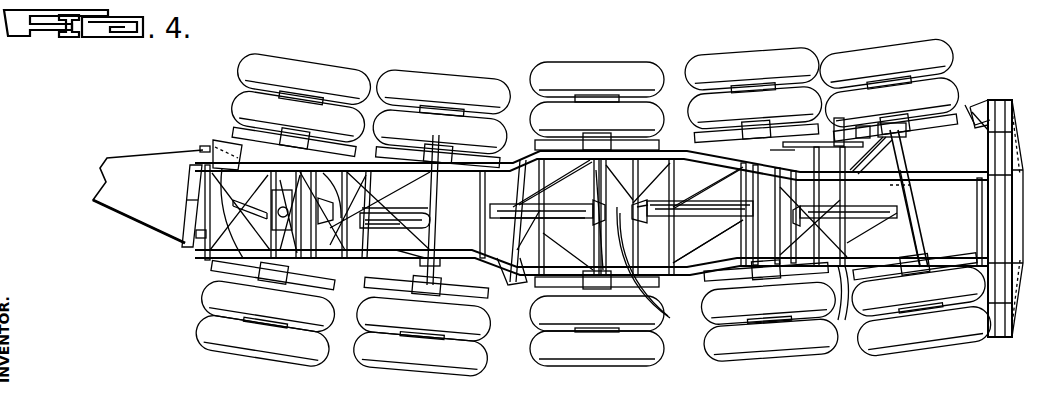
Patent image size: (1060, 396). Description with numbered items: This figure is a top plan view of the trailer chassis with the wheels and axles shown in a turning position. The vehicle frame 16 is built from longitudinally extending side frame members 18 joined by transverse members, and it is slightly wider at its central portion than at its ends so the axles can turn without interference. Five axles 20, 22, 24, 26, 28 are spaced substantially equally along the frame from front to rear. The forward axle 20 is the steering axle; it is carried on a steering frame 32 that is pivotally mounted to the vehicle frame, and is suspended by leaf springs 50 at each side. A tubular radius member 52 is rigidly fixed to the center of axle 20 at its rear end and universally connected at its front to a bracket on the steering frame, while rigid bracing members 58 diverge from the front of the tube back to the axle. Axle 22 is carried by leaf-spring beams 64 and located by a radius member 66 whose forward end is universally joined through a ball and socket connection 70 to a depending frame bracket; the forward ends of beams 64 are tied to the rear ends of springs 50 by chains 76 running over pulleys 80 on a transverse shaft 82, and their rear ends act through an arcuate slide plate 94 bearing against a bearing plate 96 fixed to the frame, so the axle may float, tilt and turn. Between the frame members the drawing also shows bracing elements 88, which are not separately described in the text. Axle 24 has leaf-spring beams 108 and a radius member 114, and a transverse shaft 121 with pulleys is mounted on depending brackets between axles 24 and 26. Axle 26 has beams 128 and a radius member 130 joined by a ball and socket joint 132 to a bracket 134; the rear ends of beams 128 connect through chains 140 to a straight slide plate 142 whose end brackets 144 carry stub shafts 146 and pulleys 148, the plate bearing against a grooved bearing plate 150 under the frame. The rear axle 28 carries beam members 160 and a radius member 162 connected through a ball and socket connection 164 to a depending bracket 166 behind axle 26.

The vehicle frame 16 is at (570, 168).
The side frame members 18 is at (478, 160).
The axle 20 is at (310, 308).
The axle 22 is at (430, 250).
The axle 24 is at (600, 191).
The axle 26 is at (757, 166).
The axle 28 is at (898, 150).
The steering frame 32 is at (216, 138).
The leaf springs 50 is at (277, 140).
The radius member 52 is at (192, 200).
The bracing members 58 is at (910, 222).
The beams 64 is at (428, 145).
The radius member 66 is at (380, 215).
The ball and socket connection 70 is at (325, 165).
The chains 76 is at (360, 266).
The pulley 80 is at (392, 158).
The transverse shaft 82 is at (368, 232).
The diagonal brace 88 is at (705, 188).
The slide plate 94 is at (515, 287).
The bearing plate 96 is at (1010, 160).
The beams 108 is at (628, 140).
The radius member 114 is at (550, 218).
The shaft 121 is at (676, 196).
The beam 128 is at (715, 125).
The radius member 130 is at (705, 215).
The ball and socket joint 132 is at (665, 300).
The bracket 134 is at (625, 270).
The chains 140 is at (828, 118).
The slide plate 142 is at (898, 125).
The brackets 144 is at (852, 125).
The stub shafts 146 is at (823, 152).
The pulleys 148 is at (838, 115).
The bearing plate 150 is at (840, 200).
The beam members 160 is at (885, 280).
The radius member 162 is at (912, 180).
The ball and socket connection 164 is at (788, 272).
The bracket 166 is at (708, 232).